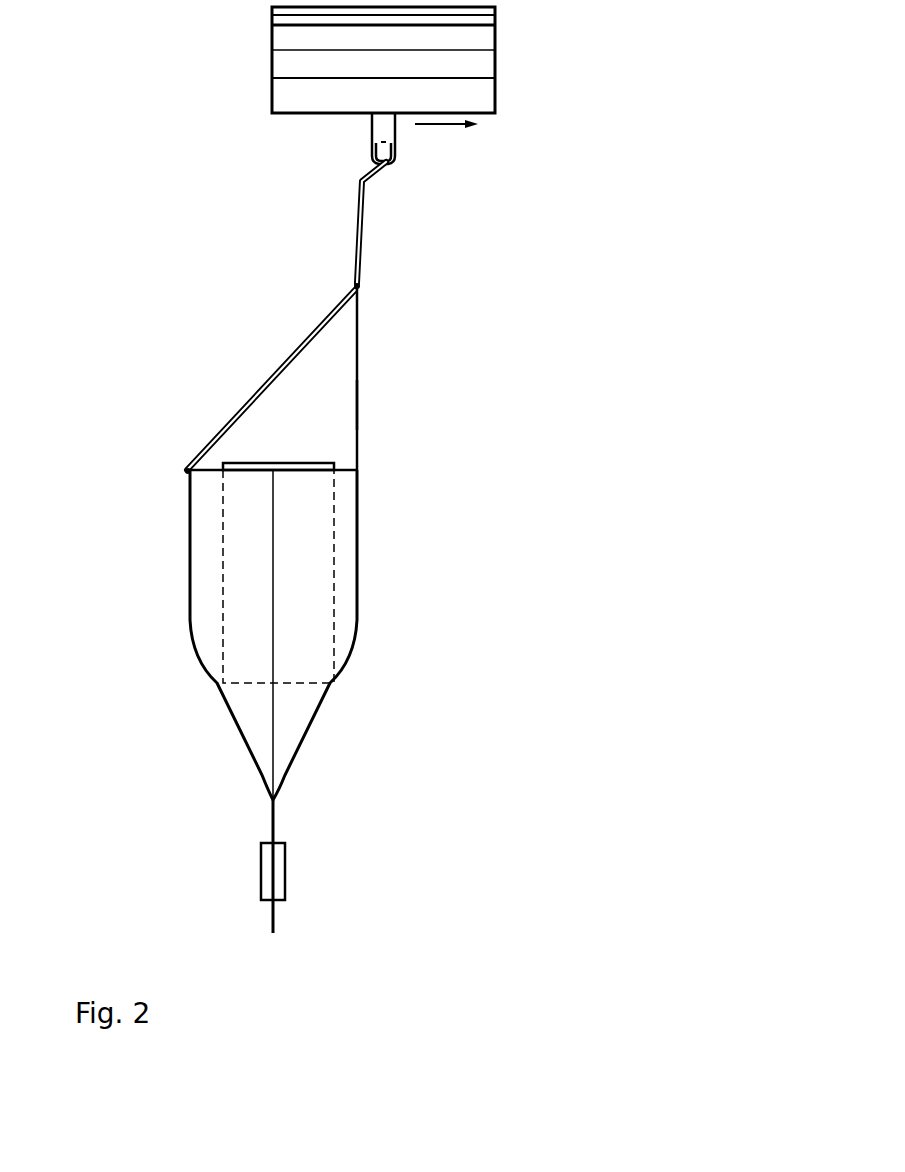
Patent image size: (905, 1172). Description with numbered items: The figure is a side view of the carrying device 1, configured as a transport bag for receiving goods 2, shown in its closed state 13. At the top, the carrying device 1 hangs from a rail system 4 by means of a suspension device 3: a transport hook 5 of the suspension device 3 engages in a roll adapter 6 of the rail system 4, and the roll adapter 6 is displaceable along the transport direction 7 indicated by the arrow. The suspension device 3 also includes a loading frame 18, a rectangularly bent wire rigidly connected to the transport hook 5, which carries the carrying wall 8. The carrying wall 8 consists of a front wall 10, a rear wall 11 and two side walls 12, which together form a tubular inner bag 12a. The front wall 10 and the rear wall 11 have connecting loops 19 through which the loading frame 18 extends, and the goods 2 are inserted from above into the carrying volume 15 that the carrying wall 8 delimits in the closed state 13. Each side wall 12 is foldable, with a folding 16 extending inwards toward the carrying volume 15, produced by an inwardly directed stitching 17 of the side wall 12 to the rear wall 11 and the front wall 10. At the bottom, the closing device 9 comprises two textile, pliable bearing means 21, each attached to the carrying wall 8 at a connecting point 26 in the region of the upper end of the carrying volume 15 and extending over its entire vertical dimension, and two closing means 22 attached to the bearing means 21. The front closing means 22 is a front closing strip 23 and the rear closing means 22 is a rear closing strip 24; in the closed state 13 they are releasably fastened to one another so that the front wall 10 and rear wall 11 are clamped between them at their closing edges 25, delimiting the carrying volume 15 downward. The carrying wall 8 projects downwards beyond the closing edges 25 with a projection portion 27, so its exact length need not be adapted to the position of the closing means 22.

The carrying device 1 is at (177, 264).
The goods 2 is at (250, 465).
The suspension device 3 is at (374, 282).
The rail system 4 is at (421, 45).
The transport hook 5 is at (360, 218).
The roll adapter 6 is at (382, 133).
The transport direction 7 is at (440, 126).
The carrying wall 8 is at (374, 405).
The closing device 9 is at (300, 882).
The front wall 10 is at (357, 393).
The rear wall 11 is at (233, 727).
The side wall 12 is at (255, 587).
The inner bag 12a is at (260, 747).
The closed state 13 is at (320, 898).
The carrying volume 15 is at (262, 446).
The folding 16 is at (273, 662).
The stitching 17 is at (190, 612).
The loading frame 18 is at (305, 342).
The connecting loop 19 is at (187, 471).
The bearing means 21 is at (357, 553).
The closing means 22 is at (261, 852).
The front closing strip 23 is at (595, 826).
The rear closing strip 24 is at (93, 865).
The closing edge 25 is at (277, 840).
The connecting point 26 is at (187, 471).
The projection portion 27 is at (275, 918).